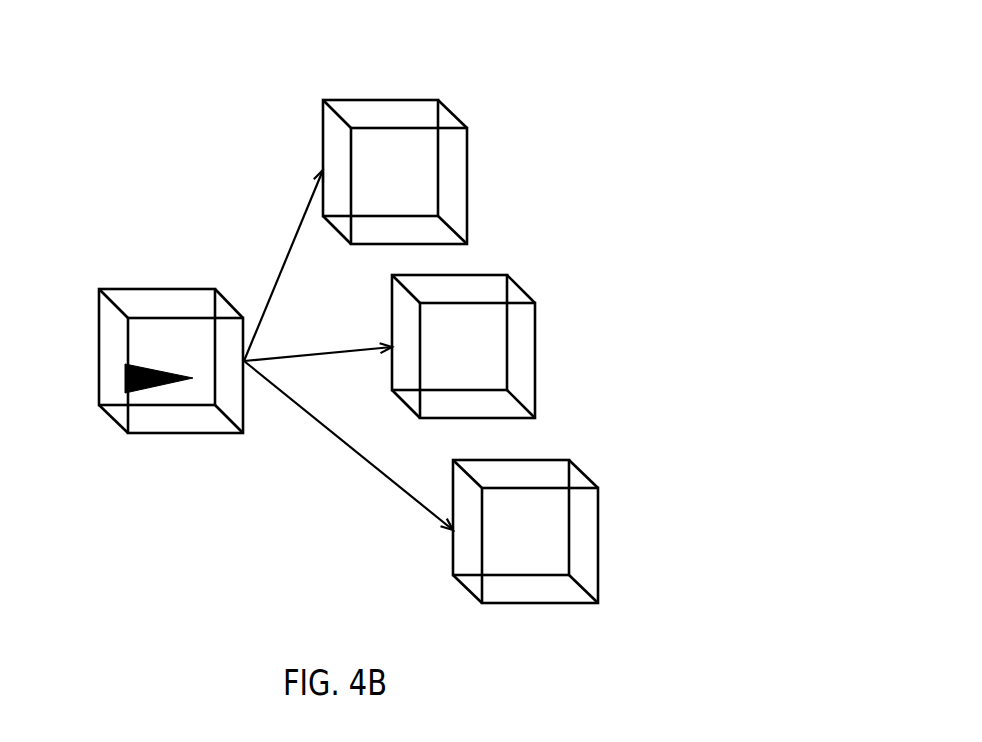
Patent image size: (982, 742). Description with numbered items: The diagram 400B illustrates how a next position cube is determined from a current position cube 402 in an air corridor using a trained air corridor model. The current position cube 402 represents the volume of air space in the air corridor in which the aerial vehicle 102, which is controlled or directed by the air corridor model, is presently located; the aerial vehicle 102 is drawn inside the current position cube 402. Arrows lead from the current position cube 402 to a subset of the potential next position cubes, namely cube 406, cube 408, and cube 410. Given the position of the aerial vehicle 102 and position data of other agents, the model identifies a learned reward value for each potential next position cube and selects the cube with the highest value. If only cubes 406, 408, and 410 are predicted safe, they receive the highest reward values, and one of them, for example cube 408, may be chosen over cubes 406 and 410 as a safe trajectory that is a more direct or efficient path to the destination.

The diagram 400B is at (760, 184).
The current position cube 402 is at (98, 362).
The aerial vehicle 102 is at (158, 388).
The cube 406 is at (463, 169).
The cube 408 is at (533, 345).
The cube 410 is at (595, 513).